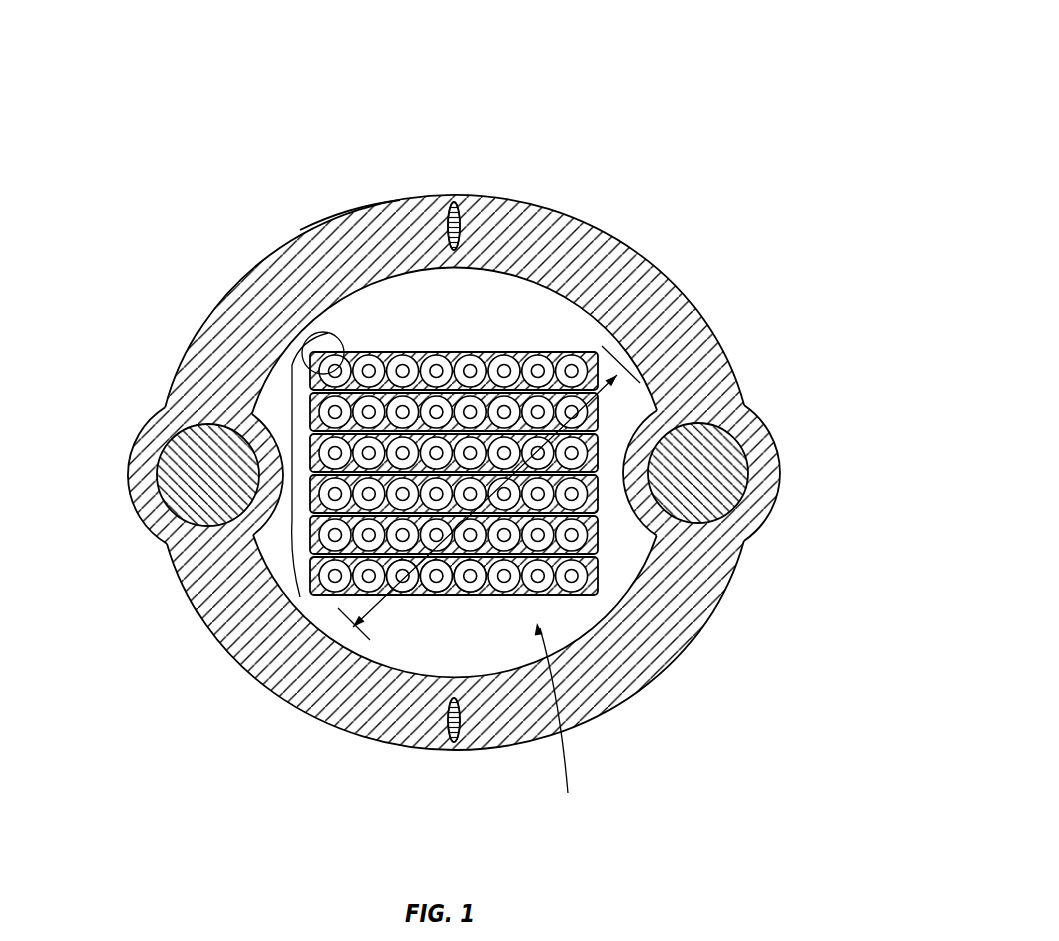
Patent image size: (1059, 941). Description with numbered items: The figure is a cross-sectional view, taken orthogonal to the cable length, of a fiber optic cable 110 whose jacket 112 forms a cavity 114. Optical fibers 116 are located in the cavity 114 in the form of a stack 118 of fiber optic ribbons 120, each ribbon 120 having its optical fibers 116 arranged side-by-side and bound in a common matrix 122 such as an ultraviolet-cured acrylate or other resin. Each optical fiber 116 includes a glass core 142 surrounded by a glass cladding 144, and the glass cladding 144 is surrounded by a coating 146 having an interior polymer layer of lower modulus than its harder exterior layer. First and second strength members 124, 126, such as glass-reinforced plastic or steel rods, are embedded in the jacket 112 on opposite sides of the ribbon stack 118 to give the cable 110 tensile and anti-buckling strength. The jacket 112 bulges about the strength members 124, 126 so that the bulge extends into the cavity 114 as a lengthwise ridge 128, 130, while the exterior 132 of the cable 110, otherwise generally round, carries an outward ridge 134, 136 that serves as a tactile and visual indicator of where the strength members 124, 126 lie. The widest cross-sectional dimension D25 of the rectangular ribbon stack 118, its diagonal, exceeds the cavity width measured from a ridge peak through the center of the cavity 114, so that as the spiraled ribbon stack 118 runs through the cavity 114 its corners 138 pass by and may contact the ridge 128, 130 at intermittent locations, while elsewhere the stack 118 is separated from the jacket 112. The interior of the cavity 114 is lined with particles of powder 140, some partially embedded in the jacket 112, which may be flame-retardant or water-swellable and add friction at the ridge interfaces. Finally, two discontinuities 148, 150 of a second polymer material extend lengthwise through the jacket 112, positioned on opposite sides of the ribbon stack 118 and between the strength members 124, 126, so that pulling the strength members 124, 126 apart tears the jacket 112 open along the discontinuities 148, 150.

The fiber optic cable 110 is at (682, 175).
The jacket 112 is at (680, 288).
The cavity 114 is at (560, 658).
The optical fibers 116 is at (363, 592).
The stack 118 is at (288, 538).
The fiber optic ribbons 120 is at (600, 533).
The common matrix 122 is at (520, 353).
The first strength member 124 is at (202, 462).
The second strength member 126 is at (705, 420).
The ridge 128 is at (262, 400).
The ridge 130 is at (630, 507).
The exterior 132 is at (340, 205).
The ridge 134 is at (130, 500).
The ridge 136 is at (776, 438).
The corners 138 is at (337, 370).
The powder 140 is at (562, 726).
The glass core 142 is at (470, 600).
The glass cladding 144 is at (437, 598).
The coating 146 is at (398, 585).
The discontinuity of material 148 is at (449, 202).
The discontinuity of material 150 is at (455, 752).
The diagonal dimension of ribbon stack D25 is at (652, 380).